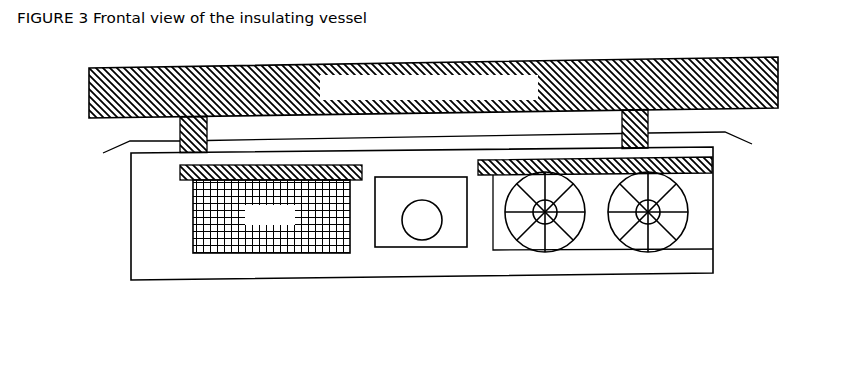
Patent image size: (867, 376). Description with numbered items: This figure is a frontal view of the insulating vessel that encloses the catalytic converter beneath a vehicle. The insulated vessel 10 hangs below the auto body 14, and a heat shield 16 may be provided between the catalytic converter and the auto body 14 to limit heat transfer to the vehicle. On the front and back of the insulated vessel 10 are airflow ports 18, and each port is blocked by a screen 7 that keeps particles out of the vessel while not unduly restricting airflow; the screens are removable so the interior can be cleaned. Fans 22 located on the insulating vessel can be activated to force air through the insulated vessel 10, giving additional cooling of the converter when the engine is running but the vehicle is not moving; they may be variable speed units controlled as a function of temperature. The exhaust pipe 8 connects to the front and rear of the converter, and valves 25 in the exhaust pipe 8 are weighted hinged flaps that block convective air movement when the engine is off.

The auto body 14 is at (89, 106).
The heat shield 16 is at (92, 155).
The insulated vessel 10 is at (158, 292).
The airflow port 18 is at (235, 253).
The screen 7 is at (325, 253).
The valve 25 is at (390, 226).
The exhaust pipe 8 is at (422, 220).
The fan 22 is at (533, 237).